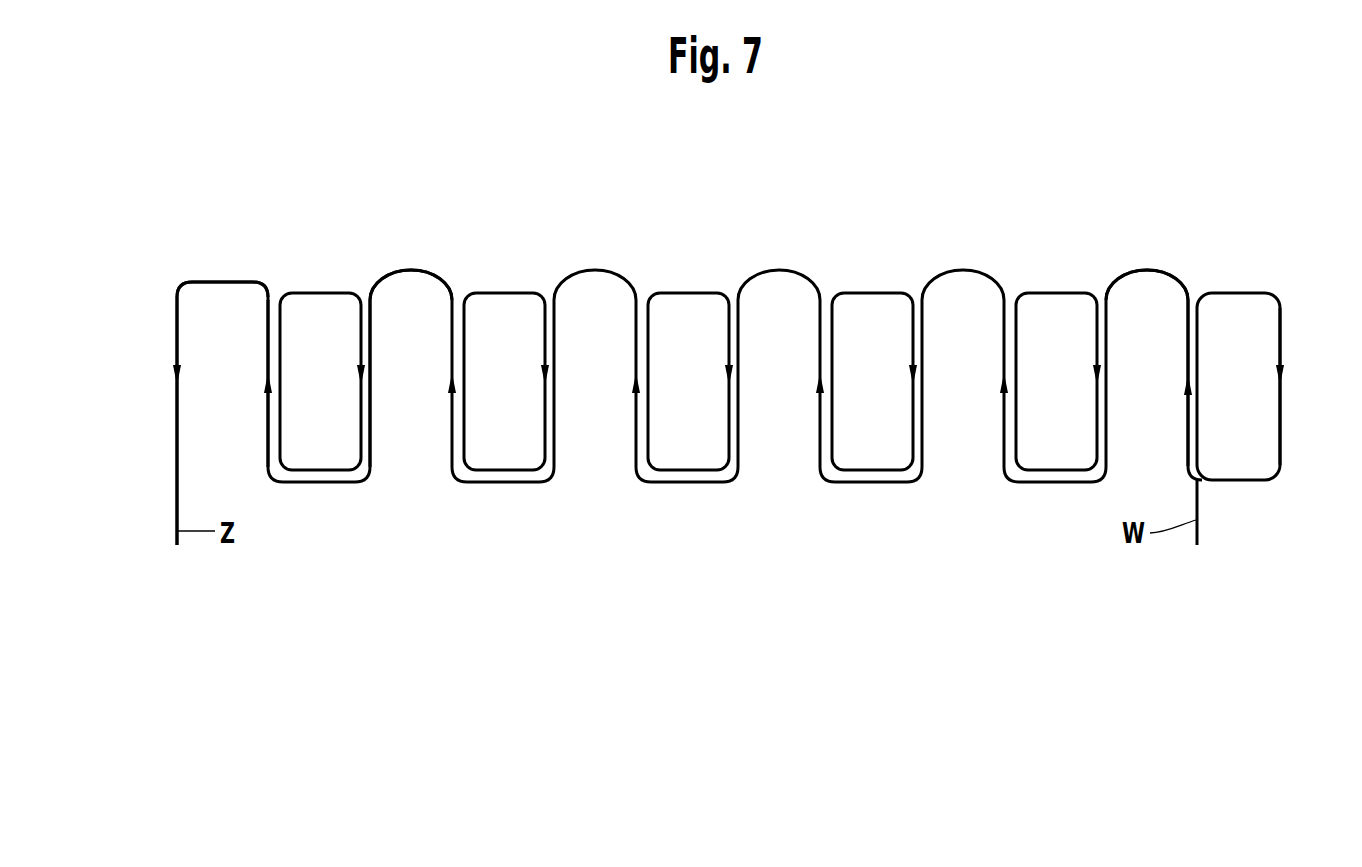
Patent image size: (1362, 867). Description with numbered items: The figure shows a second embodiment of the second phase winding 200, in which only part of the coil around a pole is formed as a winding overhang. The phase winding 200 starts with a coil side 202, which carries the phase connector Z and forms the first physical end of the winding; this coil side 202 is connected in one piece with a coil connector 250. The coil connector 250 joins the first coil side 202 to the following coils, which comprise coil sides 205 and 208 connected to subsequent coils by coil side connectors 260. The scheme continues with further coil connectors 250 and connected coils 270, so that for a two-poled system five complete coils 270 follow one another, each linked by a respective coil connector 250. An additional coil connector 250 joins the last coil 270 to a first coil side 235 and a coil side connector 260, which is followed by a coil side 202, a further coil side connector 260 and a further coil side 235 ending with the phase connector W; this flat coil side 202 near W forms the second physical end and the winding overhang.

The second phase winding 200 is at (794, 210).
The coil side 202 is at (174, 423).
The coil side 205 is at (267, 420).
The coil side 208 is at (373, 393).
The coil side 235 is at (1187, 418).
The coil connector 250 is at (222, 280).
The coil side connector 260 is at (322, 292).
The coil 270 is at (346, 268).